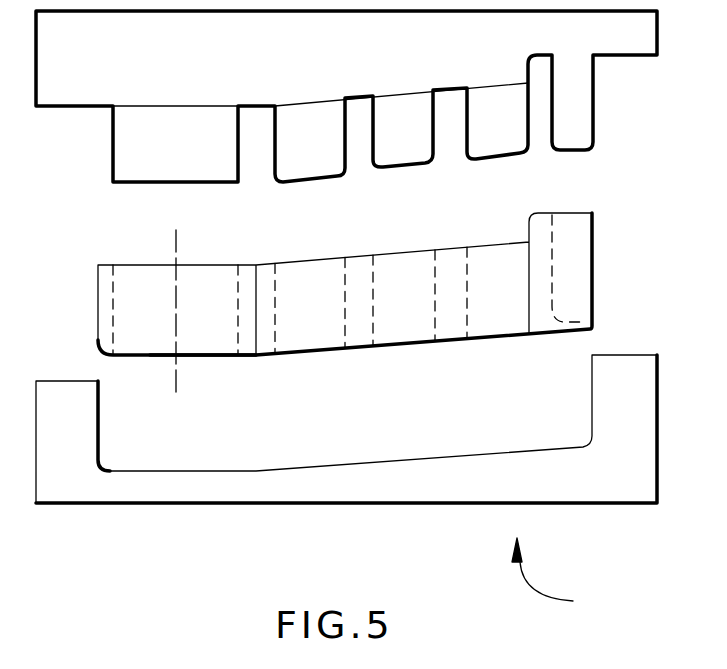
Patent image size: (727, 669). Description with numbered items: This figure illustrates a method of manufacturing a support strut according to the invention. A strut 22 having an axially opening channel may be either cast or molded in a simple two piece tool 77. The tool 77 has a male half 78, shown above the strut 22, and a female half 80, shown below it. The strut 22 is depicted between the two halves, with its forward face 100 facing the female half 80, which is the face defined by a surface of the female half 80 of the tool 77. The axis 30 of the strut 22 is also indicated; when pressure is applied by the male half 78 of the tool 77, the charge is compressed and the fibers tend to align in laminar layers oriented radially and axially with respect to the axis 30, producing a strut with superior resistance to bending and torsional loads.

The male half 78 is at (290, 70).
The strut 22 is at (562, 213).
The axis 30 is at (175, 250).
The forward face 100 is at (222, 355).
The female half 80 is at (640, 483).
The two piece tool 77 is at (564, 582).